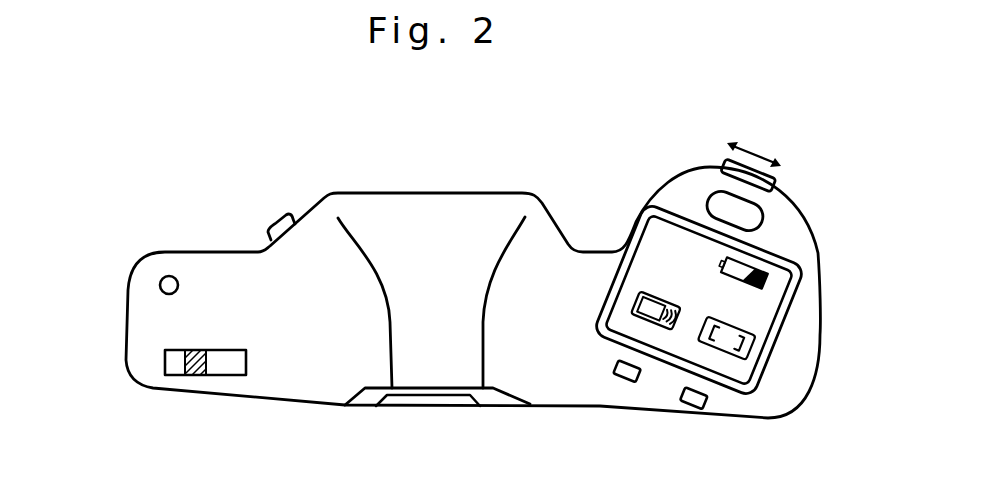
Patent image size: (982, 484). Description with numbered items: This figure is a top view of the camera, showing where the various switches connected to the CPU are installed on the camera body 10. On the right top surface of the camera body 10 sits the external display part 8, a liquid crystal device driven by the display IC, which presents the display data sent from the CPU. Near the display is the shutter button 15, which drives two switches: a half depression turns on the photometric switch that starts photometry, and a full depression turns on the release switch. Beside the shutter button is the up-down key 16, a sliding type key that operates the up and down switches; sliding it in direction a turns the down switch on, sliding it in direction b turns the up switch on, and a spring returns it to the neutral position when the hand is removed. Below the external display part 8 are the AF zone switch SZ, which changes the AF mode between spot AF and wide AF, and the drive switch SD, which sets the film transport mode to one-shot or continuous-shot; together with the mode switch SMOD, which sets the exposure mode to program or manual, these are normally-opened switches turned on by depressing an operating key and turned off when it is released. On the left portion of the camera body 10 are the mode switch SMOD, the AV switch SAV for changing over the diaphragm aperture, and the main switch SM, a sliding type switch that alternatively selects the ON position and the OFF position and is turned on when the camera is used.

The camera body 10 is at (435, 193).
The external display part 8 is at (767, 333).
The shutter button 15 is at (757, 218).
The up-down key 16 is at (728, 165).
The mode switch SMOD is at (168, 276).
The AV switch SAV is at (275, 225).
The main switch SM is at (220, 376).
The drive switch SD is at (621, 387).
The AF zone switch SZ is at (689, 414).
The direction a is at (739, 138).
The direction b is at (785, 165).